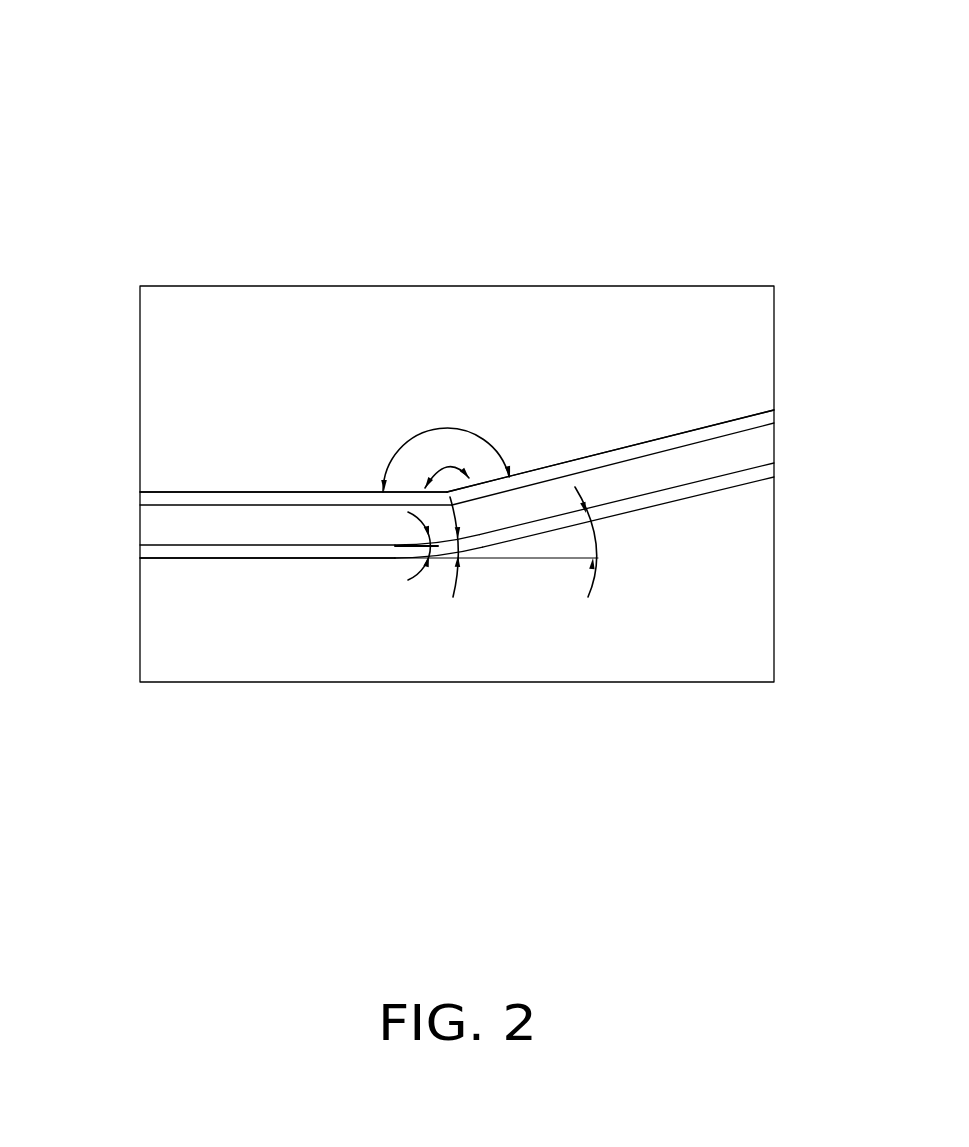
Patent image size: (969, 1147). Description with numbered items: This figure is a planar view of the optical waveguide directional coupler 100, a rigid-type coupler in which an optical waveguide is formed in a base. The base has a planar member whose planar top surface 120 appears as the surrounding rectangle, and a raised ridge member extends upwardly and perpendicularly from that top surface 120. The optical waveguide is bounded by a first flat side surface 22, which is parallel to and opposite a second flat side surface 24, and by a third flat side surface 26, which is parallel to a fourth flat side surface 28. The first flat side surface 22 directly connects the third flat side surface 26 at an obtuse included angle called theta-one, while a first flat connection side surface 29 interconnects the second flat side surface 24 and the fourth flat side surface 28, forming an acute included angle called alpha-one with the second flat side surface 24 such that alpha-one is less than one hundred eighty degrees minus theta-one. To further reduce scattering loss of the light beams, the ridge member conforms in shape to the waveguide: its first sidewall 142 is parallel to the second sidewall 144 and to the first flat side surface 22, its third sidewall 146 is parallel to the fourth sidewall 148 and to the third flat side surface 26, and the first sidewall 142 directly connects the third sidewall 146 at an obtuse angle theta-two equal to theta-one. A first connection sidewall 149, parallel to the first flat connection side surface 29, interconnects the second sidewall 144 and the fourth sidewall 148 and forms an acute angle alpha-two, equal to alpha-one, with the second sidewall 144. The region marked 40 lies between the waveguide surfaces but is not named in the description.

The optical waveguide directional coupler 100 is at (438, 68).
The planar top surface 120 is at (695, 312).
The first flat side surface 22 is at (295, 505).
The first sidewall 142 is at (337, 492).
The third flat side surface 26 is at (662, 451).
The third sidewall 146 is at (620, 447).
The second flat side surface 24 is at (297, 545).
The second sidewall 144 is at (342, 560).
The gap 40 is at (160, 523).
The first flat connection side surface 29 is at (500, 528).
The first connection sidewall 149 is at (522, 538).
The fourth flat side surface 28 is at (697, 483).
The fourth sidewall 148 is at (680, 503).